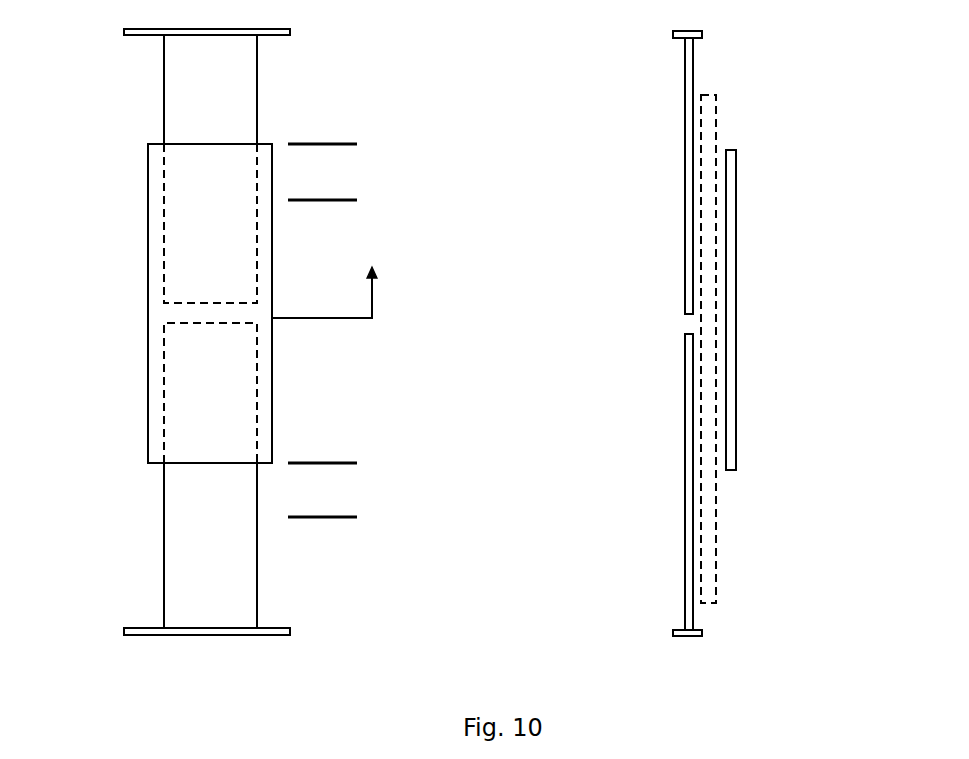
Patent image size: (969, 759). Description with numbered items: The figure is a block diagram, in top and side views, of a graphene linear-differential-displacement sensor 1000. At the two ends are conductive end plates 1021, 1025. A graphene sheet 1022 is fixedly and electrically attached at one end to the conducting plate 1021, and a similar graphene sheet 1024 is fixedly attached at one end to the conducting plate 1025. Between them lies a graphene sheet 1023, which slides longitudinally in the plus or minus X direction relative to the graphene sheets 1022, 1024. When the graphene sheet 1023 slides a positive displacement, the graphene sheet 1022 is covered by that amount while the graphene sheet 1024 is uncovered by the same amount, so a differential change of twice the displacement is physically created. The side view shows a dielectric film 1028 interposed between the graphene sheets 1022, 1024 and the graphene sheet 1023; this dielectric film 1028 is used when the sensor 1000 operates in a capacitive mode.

The graphene linear-differential-displacement sensor 1000 is at (108, 87).
The conductive end plate 1021 is at (670, 31).
The graphene sheet 1022 is at (682, 172).
The graphene sheet 1023 is at (270, 368).
The graphene sheet 1024 is at (682, 478).
The conductive end plate 1025 is at (670, 629).
The dielectric film 1028 is at (715, 127).